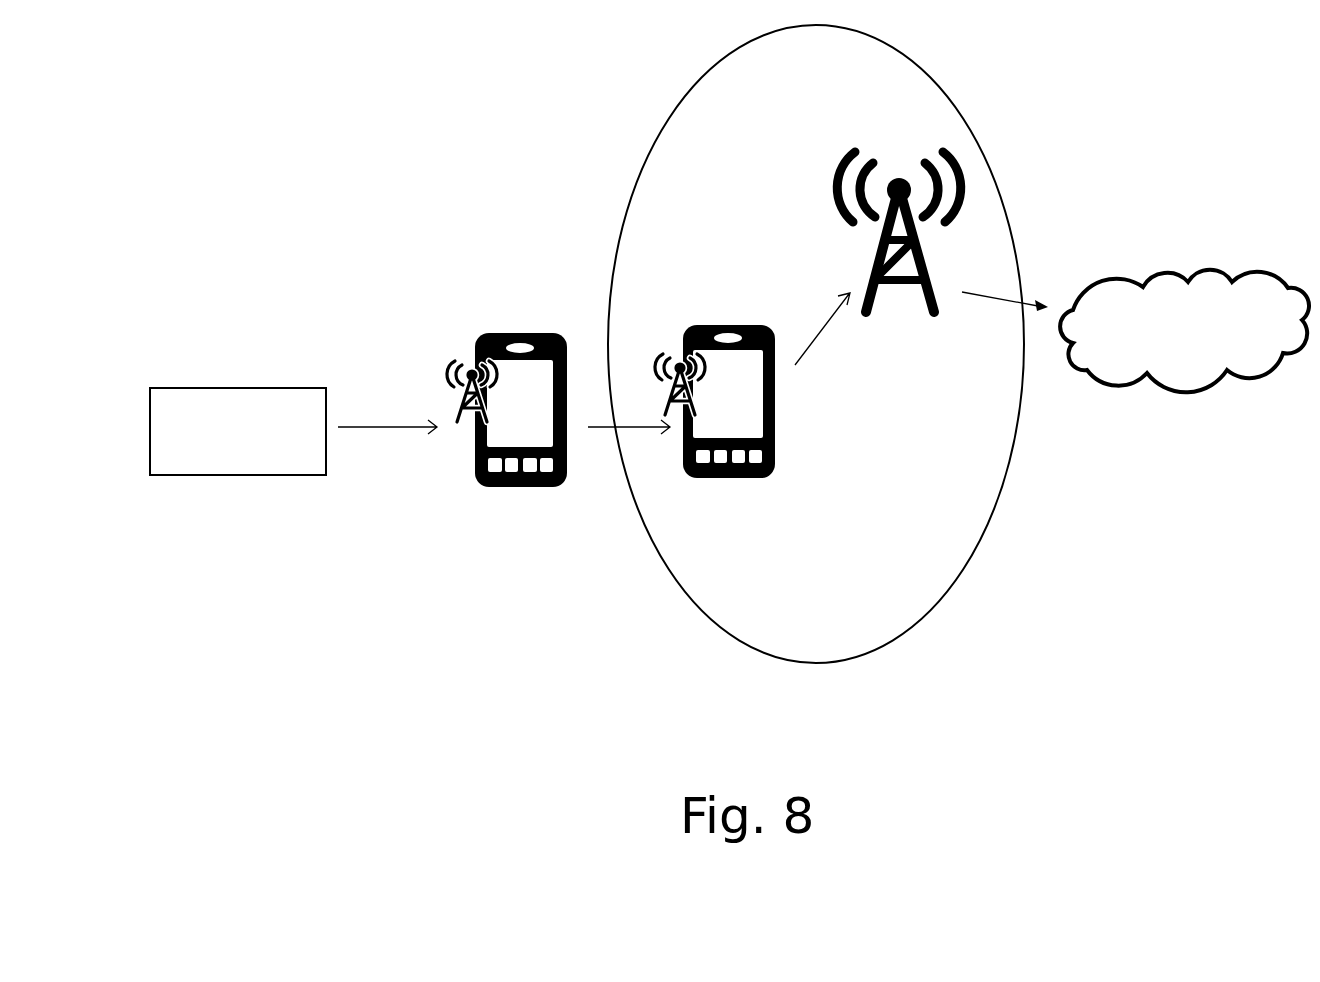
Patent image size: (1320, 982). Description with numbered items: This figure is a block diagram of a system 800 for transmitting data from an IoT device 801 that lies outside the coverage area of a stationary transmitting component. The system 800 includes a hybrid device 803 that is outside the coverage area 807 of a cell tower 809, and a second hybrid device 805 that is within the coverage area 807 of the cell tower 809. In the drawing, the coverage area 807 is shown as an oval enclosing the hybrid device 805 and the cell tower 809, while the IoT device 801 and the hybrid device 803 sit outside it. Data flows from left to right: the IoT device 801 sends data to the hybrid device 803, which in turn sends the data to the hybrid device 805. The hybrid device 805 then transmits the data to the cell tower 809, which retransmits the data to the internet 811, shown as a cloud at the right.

The system 800 is at (563, 105).
The IoT device 801 is at (237, 386).
The hybrid device 803 is at (522, 330).
The hybrid device 805 is at (728, 325).
The coverage area 807 is at (953, 100).
The cell tower 809 is at (845, 153).
The internet 811 is at (1185, 272).